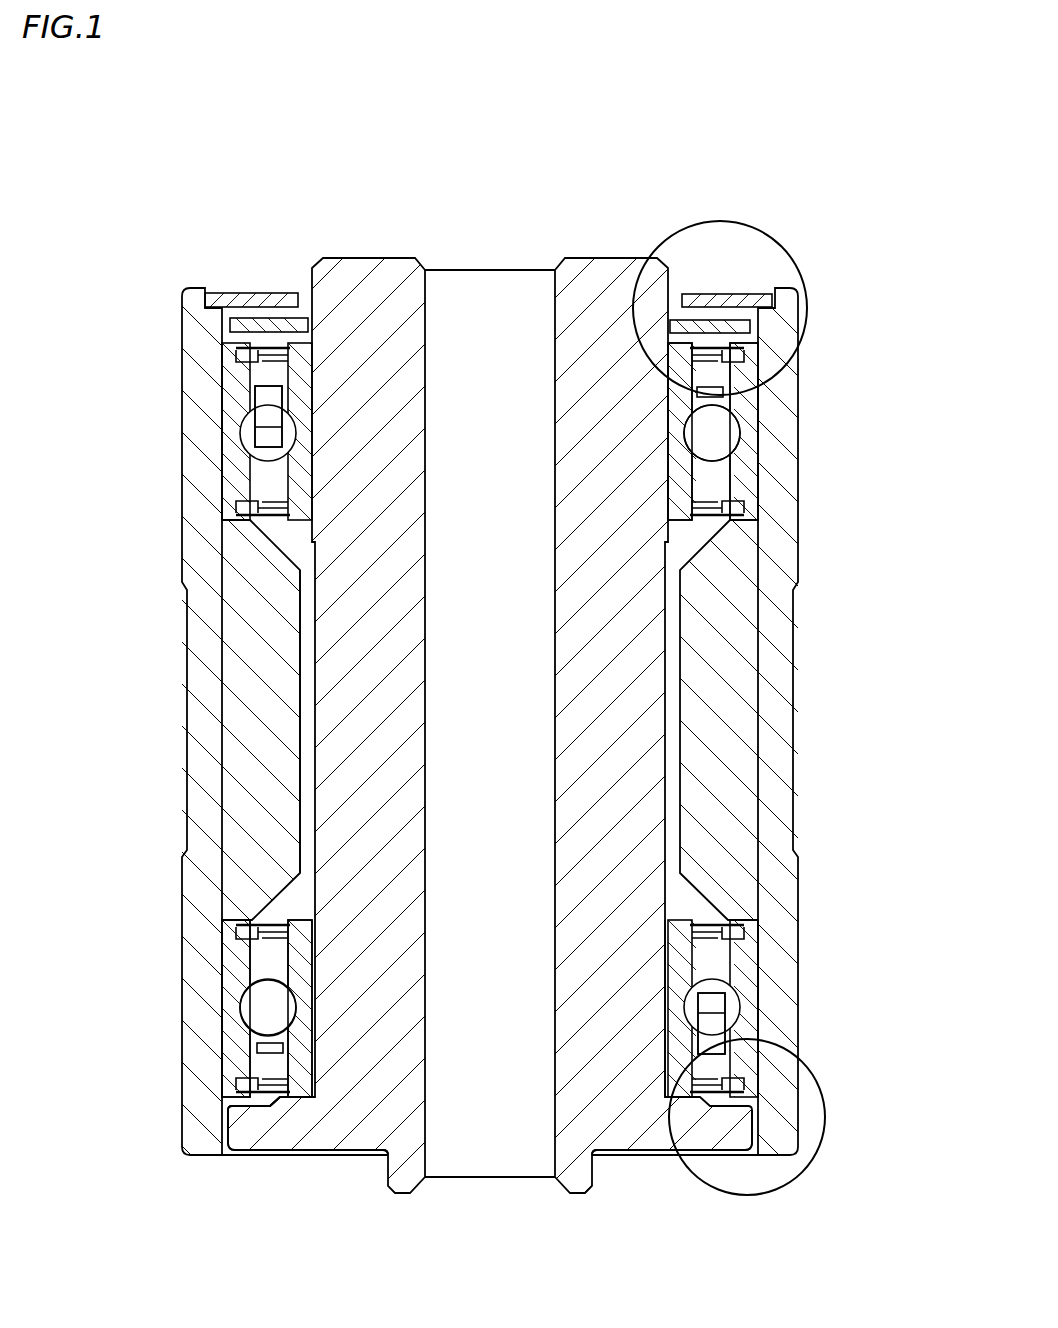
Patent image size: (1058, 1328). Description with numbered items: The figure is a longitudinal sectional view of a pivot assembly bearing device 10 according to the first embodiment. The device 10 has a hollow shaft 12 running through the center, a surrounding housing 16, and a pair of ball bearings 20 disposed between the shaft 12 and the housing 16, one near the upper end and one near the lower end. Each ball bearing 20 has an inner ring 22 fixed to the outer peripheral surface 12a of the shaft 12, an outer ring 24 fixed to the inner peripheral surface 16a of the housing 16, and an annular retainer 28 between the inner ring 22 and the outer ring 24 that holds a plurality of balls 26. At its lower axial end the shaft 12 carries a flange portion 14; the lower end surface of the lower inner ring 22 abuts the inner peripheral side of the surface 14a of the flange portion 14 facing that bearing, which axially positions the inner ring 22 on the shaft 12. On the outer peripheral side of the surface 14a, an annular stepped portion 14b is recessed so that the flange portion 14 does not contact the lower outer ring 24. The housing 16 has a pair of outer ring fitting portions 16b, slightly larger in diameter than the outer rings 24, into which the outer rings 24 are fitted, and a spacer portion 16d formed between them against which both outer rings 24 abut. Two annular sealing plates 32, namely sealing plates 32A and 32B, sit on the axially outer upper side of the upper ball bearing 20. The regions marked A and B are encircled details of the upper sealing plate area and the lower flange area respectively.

The pivot assembly bearing device 10 is at (283, 228).
The shaft 12 is at (340, 665).
The outer peripheral surface 12a is at (690, 952).
The flange portion 14 is at (288, 1128).
The surface 14a is at (308, 1087).
The annular stepped portion 14b is at (740, 1170).
The housing 16 is at (210, 780).
The inner peripheral surface 16a is at (760, 998).
The outer ring fitting portion 16b is at (230, 460).
The spacer portion 16d is at (292, 610).
The ball bearing 20 is at (214, 434).
The inner ring 22 is at (686, 480).
The outer ring 24 is at (748, 383).
The ball 26 is at (722, 433).
The annular retainer 28 is at (265, 398).
The annular sealing plate 32 is at (502, 233).
The annular sealing plate 32A is at (678, 326).
The annular sealing plate 32B is at (735, 300).
The enlarged portion A is at (791, 257).
The enlarged portion B is at (800, 1175).